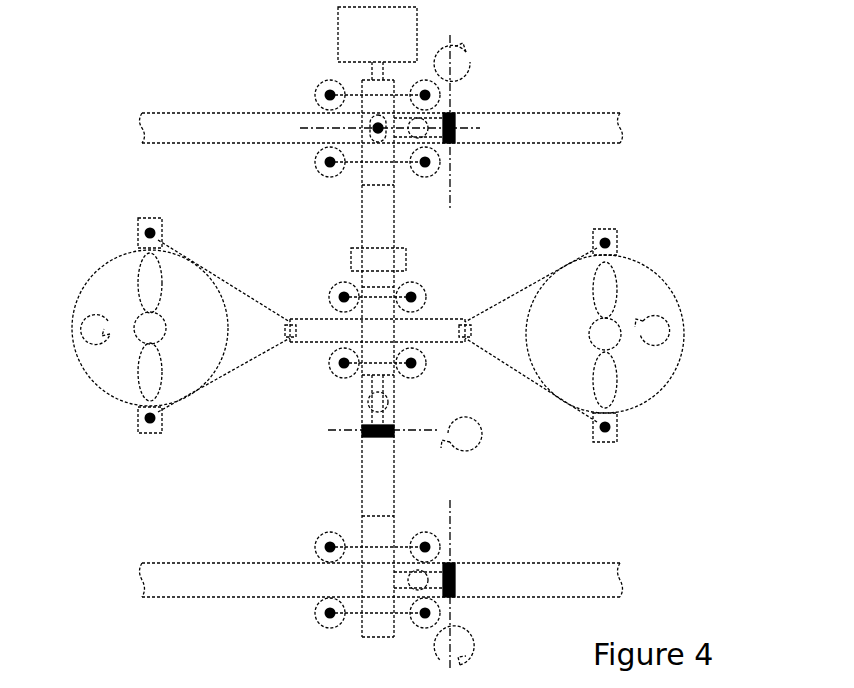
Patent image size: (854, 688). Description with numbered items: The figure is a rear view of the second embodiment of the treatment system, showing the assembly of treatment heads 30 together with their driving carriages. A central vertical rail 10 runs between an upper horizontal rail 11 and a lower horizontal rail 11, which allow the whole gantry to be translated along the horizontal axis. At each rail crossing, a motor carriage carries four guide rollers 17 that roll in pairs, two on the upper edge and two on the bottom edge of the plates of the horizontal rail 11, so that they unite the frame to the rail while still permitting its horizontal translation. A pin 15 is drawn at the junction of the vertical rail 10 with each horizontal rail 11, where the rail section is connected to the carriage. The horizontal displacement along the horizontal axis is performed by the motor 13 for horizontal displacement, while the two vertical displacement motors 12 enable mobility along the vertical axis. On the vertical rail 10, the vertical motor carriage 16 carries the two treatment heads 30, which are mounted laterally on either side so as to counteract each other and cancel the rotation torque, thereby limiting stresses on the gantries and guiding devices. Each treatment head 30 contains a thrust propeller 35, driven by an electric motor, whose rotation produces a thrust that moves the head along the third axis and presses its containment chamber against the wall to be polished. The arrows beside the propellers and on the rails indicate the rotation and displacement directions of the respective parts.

The vertical rail 10 is at (382, 210).
The horizontal rail 11 is at (600, 133).
The vertical displacement motor 12 is at (378, 402).
The motor for horizontal displacement 13 is at (420, 578).
The pin 15 is at (377, 110).
The vertical motor carriage 16 is at (338, 328).
The guide rollers 17 is at (330, 162).
The treatment head 30 is at (72, 288).
The thrust propeller 35 is at (150, 295).